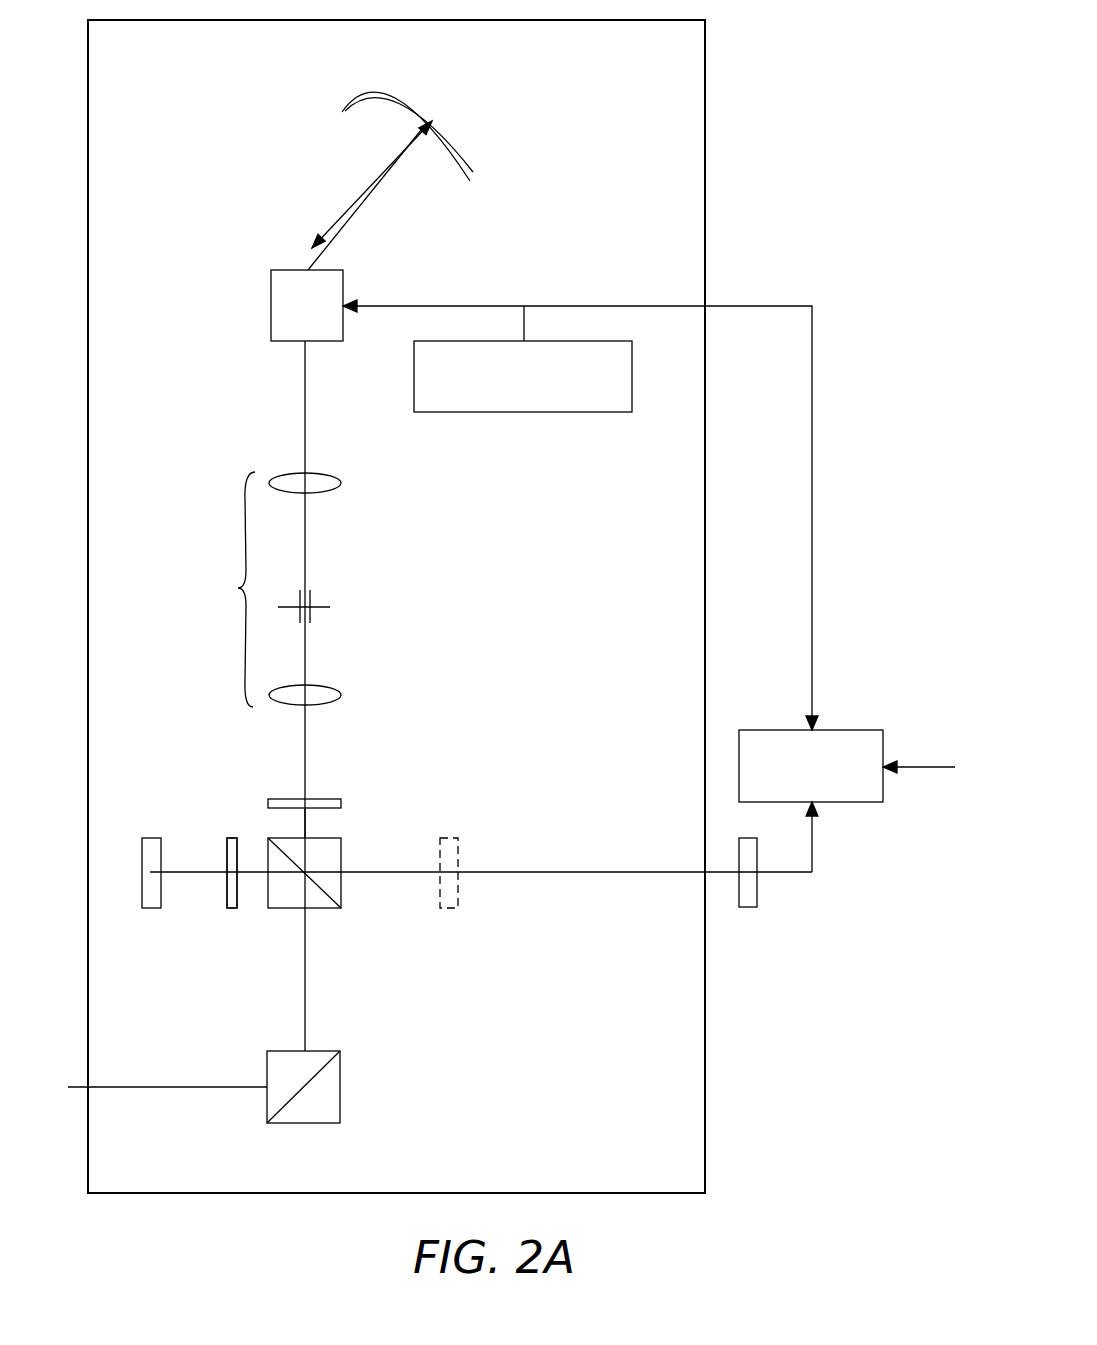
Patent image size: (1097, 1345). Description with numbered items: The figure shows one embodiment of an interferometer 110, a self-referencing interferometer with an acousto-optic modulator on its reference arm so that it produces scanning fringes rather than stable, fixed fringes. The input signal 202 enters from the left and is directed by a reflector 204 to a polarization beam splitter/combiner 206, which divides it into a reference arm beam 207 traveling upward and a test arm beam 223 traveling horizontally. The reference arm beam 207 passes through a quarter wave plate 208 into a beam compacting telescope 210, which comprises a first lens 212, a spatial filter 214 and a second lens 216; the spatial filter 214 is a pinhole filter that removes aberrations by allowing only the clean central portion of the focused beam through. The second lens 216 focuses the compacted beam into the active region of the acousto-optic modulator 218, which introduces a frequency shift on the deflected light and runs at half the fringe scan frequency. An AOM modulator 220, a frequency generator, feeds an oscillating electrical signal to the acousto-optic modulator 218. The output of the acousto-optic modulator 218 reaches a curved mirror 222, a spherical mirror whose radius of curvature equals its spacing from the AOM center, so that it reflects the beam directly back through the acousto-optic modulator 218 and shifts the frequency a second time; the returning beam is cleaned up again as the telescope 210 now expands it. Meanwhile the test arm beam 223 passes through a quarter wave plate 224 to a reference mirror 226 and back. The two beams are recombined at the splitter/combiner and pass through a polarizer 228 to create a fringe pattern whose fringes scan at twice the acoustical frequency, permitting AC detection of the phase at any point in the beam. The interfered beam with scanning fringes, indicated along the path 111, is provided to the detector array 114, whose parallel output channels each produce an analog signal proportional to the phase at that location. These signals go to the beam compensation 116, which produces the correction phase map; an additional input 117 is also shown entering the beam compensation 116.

The interferometer 110 is at (705, 212).
The beam path 111 is at (553, 872).
The detector array 114 is at (747, 907).
The beam compensation 116 is at (833, 803).
The input signal 117 is at (932, 766).
The input signal 202 is at (237, 1087).
The reflector 204 is at (340, 1092).
The polarization beam splitter/combiner 206 is at (320, 908).
The reference arm beam 207 is at (307, 823).
The quarter wave plate 208 is at (341, 803).
The beam compacting telescope 210 is at (218, 589).
The first lens 212 is at (343, 695).
The spatial filter 214 is at (352, 605).
The second lens 216 is at (343, 483).
The acousto-optic modulator 218 is at (345, 290).
The AOM modulator 220 is at (498, 413).
The curved mirror 222 is at (457, 132).
The test arm beam 223 is at (252, 873).
The quarter wave plate 224 is at (230, 838).
The reference mirror 226 is at (150, 908).
The polarizer 228 is at (443, 908).